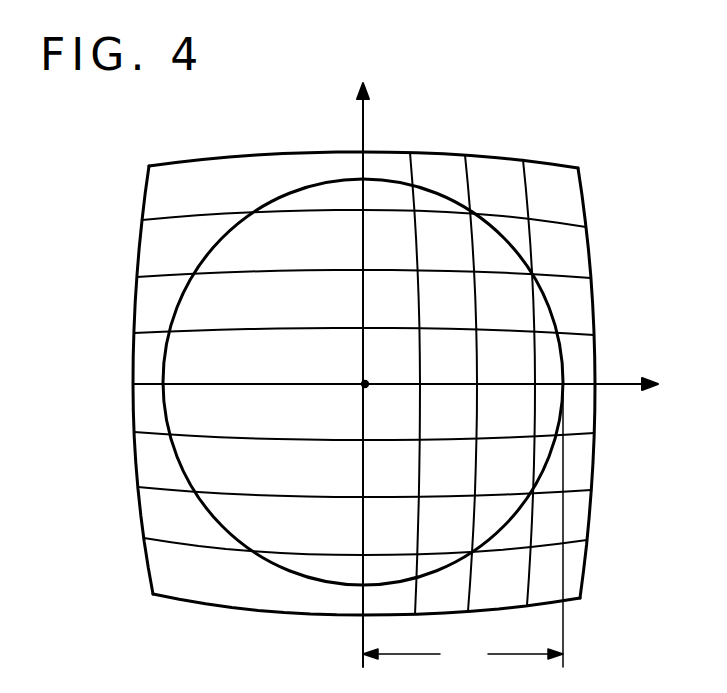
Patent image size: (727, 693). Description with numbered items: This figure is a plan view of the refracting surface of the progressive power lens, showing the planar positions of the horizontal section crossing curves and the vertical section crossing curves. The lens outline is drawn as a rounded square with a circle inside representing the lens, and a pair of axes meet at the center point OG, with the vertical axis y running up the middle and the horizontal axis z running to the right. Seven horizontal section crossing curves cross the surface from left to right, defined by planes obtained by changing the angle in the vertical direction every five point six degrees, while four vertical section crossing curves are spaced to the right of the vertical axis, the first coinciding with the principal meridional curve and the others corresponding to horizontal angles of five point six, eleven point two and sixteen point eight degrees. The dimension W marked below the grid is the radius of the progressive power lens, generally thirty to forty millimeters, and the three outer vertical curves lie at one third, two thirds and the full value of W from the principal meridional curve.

The origin of grid OG is at (344, 398).
The radius of the progressive power lens W is at (463, 527).
The y axis y is at (378, 80).
The z axis z is at (659, 384).